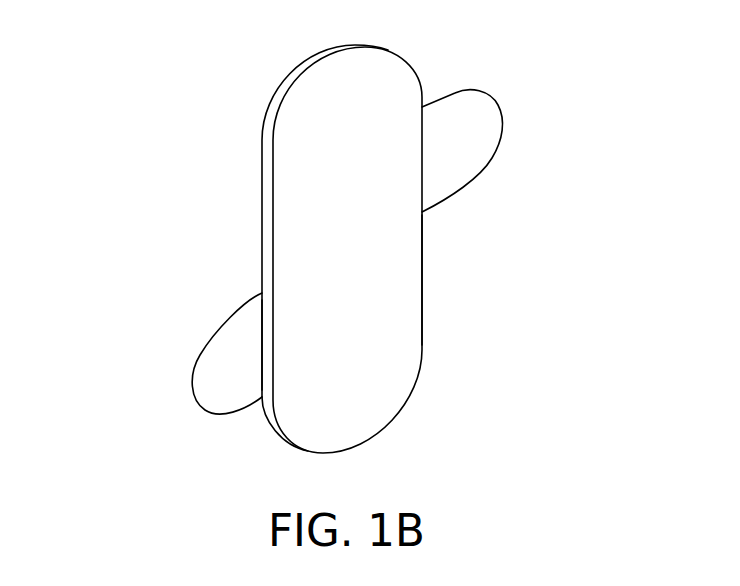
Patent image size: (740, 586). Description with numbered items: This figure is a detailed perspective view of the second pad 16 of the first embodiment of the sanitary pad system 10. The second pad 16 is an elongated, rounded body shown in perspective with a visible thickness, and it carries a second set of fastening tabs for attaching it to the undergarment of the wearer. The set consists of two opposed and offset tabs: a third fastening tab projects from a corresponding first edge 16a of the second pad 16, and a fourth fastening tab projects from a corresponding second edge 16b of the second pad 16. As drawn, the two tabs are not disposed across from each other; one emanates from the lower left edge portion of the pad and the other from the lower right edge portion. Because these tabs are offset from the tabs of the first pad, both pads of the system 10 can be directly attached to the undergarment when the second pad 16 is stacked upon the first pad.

The sanitary pad system 10 is at (525, 62).
The second pad 16 is at (312, 195).
The first edge of the second pad 16a is at (268, 280).
The second edge of the second pad 16b is at (422, 238).